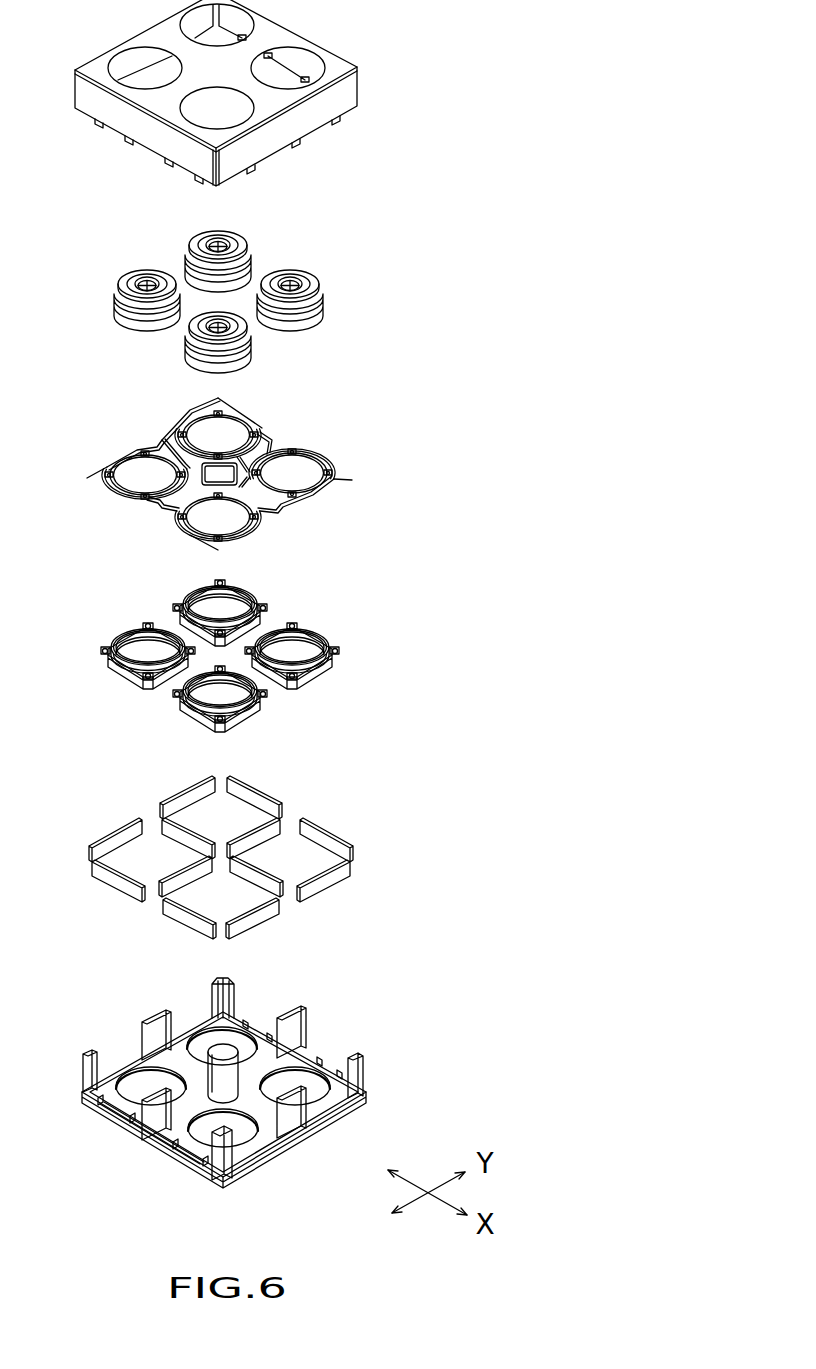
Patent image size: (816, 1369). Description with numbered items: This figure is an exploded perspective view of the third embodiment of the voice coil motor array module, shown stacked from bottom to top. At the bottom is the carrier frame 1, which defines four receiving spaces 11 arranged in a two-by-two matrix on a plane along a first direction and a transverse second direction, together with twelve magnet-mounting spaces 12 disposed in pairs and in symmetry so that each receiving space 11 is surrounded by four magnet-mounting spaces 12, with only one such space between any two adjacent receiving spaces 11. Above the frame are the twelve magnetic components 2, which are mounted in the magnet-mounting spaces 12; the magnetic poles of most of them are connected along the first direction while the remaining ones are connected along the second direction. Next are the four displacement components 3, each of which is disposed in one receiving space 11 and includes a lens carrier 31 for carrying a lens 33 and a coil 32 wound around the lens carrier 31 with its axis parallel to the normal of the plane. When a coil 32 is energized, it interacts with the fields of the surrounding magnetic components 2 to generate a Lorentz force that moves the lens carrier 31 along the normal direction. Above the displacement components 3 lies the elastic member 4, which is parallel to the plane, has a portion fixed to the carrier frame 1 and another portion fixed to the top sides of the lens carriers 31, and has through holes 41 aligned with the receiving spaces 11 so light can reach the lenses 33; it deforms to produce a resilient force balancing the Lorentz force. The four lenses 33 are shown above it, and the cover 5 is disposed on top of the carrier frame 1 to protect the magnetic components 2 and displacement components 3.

The carrier frame 1 is at (215, 1095).
The receiving spaces 11 is at (233, 1040).
The magnet-mounting spaces 12 is at (130, 1062).
The magnetic components 2 is at (162, 830).
The displacement components 3 is at (243, 669).
The lens carrier 31 is at (328, 638).
The coil 32 is at (332, 668).
The lens 33 is at (312, 283).
The elastic member 4 is at (219, 473).
The through holes 41 is at (142, 468).
The cover 5 is at (343, 93).